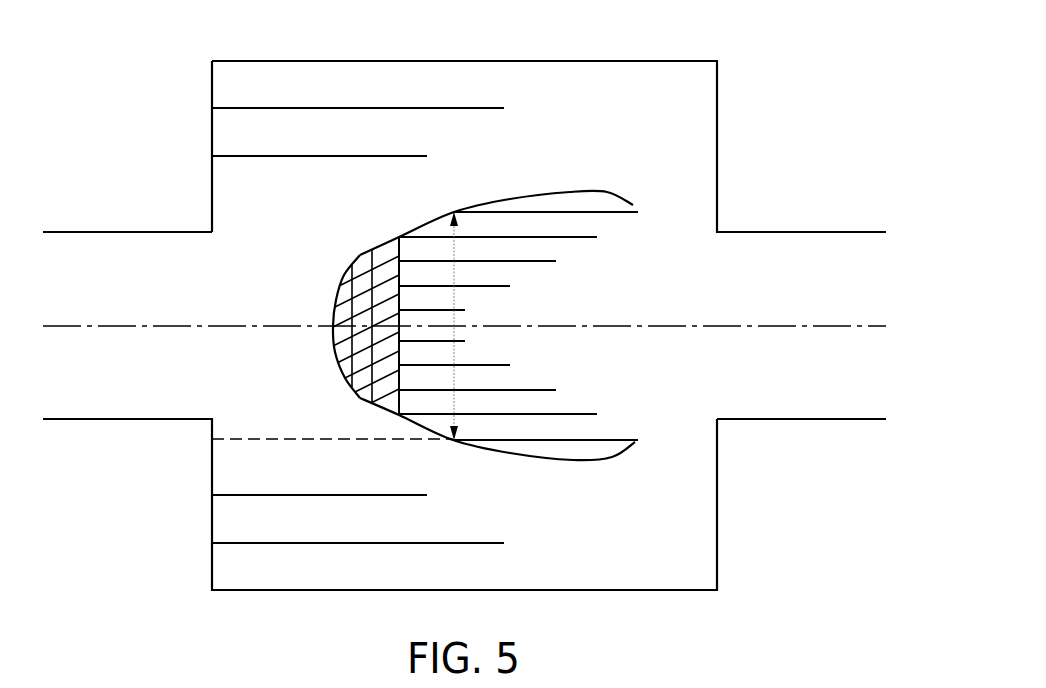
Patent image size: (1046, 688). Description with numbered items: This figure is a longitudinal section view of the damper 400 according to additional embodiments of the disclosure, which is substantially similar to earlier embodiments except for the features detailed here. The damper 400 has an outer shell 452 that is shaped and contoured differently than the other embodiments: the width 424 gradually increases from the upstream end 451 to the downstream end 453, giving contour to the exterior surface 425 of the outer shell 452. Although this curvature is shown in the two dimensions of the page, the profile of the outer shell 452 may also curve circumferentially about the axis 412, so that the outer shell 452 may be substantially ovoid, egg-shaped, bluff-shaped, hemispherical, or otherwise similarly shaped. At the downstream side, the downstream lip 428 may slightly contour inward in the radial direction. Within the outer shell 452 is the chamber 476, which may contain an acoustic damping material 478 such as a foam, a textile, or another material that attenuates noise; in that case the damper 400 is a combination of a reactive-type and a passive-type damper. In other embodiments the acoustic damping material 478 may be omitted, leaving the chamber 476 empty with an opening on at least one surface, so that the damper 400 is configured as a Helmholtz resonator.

The damper 400 is at (141, 84).
The axis 412 is at (853, 326).
The width 424 is at (452, 231).
The exterior surface 425 is at (540, 458).
The downstream lip 428 is at (633, 205).
The upstream end 451 is at (335, 315).
The outer shell 452 is at (412, 220).
The downstream end 453 is at (635, 445).
The chamber 476 is at (360, 350).
The acoustic damping material 478 is at (347, 289).